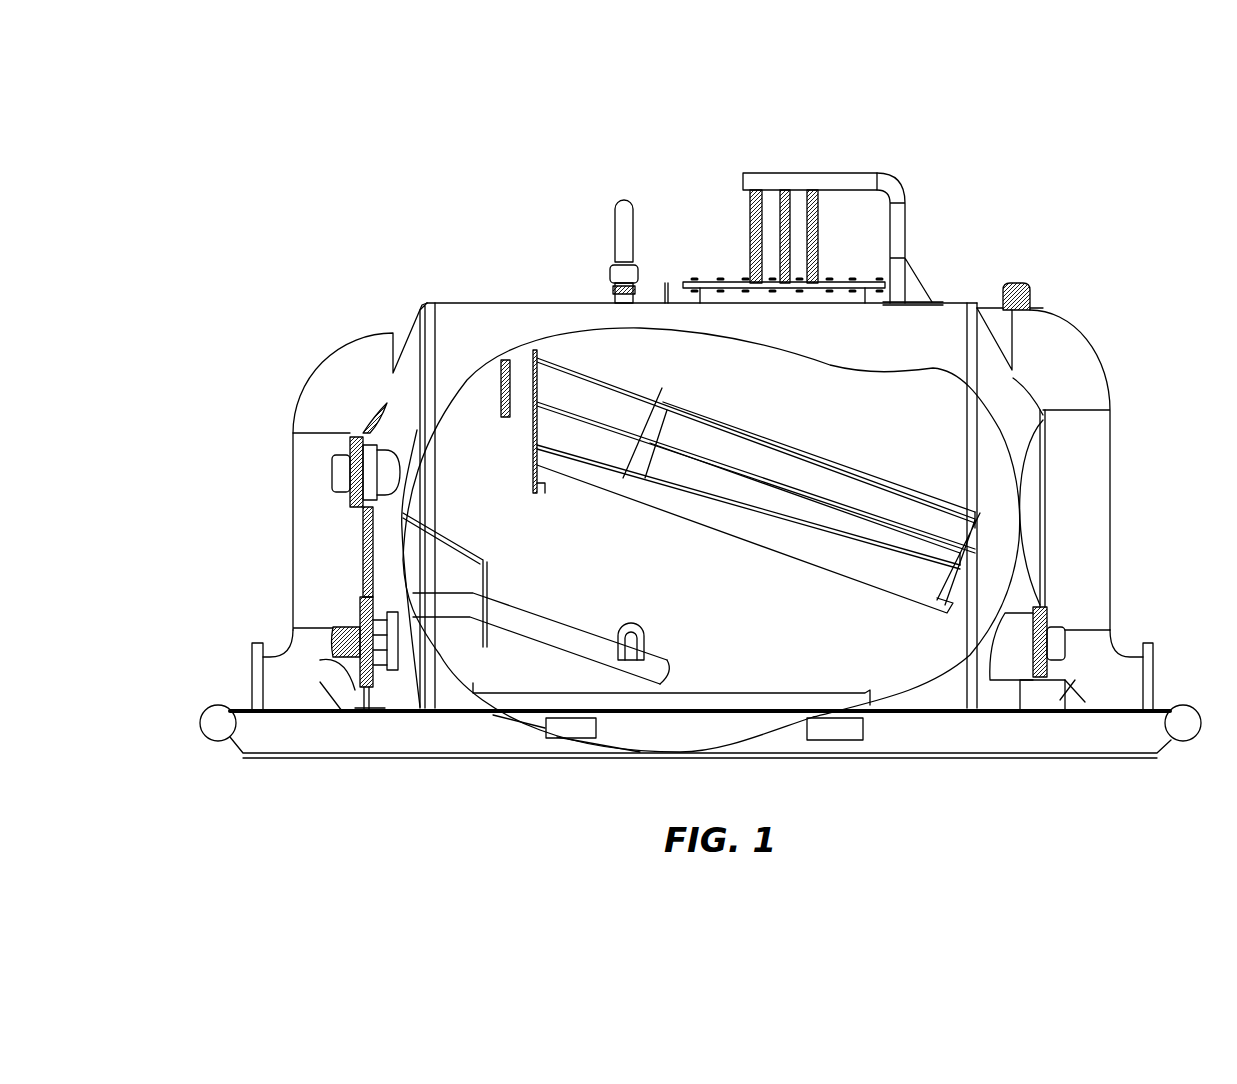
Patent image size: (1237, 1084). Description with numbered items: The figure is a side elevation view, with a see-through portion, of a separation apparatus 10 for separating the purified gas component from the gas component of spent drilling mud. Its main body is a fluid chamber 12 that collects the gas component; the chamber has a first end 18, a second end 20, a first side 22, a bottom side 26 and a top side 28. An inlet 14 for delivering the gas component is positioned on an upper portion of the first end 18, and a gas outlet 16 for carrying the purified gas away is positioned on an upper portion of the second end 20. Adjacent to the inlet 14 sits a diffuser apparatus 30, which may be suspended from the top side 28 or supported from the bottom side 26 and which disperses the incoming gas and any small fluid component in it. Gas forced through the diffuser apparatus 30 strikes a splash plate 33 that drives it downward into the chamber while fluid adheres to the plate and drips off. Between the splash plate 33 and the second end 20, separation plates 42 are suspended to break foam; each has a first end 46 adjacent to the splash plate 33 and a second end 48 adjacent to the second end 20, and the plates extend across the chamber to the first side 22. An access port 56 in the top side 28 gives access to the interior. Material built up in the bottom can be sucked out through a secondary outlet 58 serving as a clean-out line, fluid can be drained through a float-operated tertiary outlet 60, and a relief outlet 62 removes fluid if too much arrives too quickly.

The separation apparatus 10 is at (986, 177).
The fluid chamber 12 is at (507, 300).
The inlet 14 is at (340, 373).
The gas outlet 16 is at (1073, 363).
The first end 18 is at (382, 572).
The second end 20 is at (1034, 462).
The first side 22 is at (682, 582).
The bottom side 26 is at (570, 320).
The top side 28 is at (912, 705).
The diffuser apparatus 30 is at (497, 398).
The splash plate 33 is at (530, 447).
The separation plate 42 is at (605, 378).
The first end 46 is at (537, 356).
The second end 48 is at (952, 510).
The access port 56 is at (725, 279).
The secondary outlet 58 is at (442, 607).
The tertiary outlet 60 is at (648, 643).
The relief outlet 62 is at (623, 228).